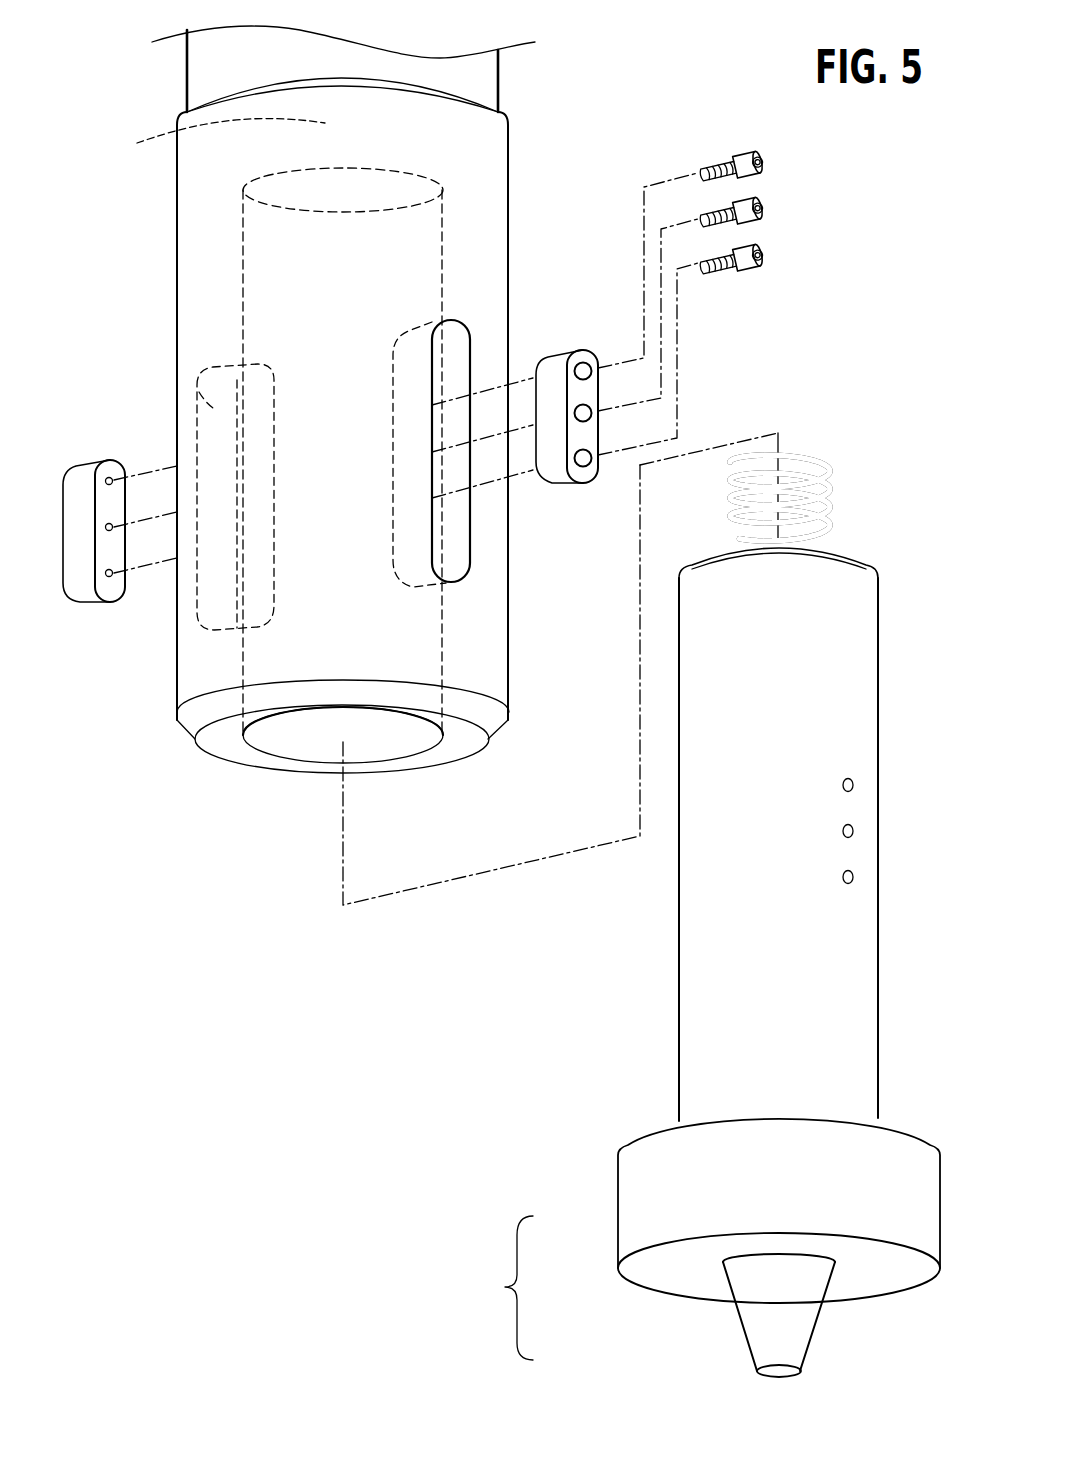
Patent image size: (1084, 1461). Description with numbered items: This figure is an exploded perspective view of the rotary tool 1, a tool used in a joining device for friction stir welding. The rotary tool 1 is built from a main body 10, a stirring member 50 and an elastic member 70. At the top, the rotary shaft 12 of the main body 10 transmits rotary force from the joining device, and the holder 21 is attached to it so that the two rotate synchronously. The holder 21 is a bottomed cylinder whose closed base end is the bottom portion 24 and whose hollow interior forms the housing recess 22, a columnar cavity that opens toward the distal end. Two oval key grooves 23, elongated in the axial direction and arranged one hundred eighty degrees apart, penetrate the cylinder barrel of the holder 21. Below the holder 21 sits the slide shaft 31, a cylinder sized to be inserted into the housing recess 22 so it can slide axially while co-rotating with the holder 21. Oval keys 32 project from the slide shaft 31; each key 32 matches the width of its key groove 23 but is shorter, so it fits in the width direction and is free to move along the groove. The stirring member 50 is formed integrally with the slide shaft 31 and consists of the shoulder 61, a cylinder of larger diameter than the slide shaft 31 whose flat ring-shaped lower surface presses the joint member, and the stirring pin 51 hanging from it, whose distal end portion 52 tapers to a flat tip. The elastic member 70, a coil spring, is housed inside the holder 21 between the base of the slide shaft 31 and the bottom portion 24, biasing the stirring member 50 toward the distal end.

The rotary tool 1 is at (565, 147).
The main body 10 is at (523, 222).
The rotary shaft 12 is at (192, 82).
The holder 21 is at (208, 236).
The housing recess 22 is at (281, 740).
The key groove 23 is at (470, 344).
The bottom portion 24 is at (137, 143).
The slide shaft 31 is at (847, 663).
The key 32 is at (85, 585).
The stirring member 50 is at (498, 1288).
The stirring pin 51 is at (748, 1312).
The distal end portion 52 is at (758, 1355).
The shoulder 61 is at (643, 1202).
The elastic member 70 is at (808, 456).